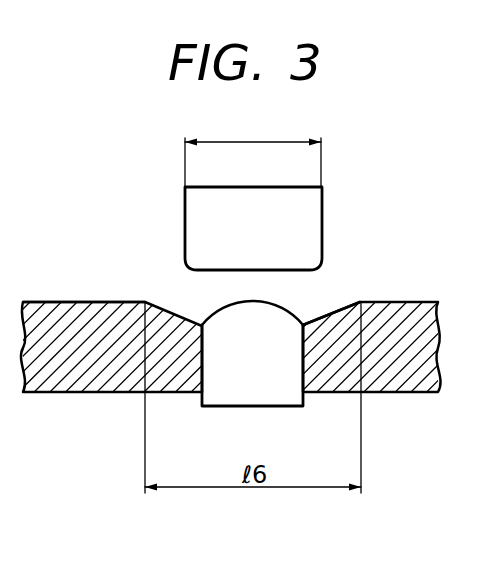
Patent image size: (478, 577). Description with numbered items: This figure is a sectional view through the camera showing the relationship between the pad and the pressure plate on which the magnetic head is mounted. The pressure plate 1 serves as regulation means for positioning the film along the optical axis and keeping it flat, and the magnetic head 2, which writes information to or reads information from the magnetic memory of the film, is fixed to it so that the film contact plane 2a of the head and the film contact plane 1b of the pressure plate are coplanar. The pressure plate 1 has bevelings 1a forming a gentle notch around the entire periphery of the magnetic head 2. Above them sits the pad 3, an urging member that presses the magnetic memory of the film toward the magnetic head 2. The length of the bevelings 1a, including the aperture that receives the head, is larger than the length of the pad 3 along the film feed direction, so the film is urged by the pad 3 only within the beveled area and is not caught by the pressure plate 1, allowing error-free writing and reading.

The pressure plate 1 is at (60, 377).
The bevelings 1a is at (339, 313).
The film contact plane of the pressure plate 1b is at (57, 302).
The magnetic head 2 is at (230, 393).
The film contact plane of the magnetic head 2a is at (298, 284).
The pad 3 is at (308, 209).